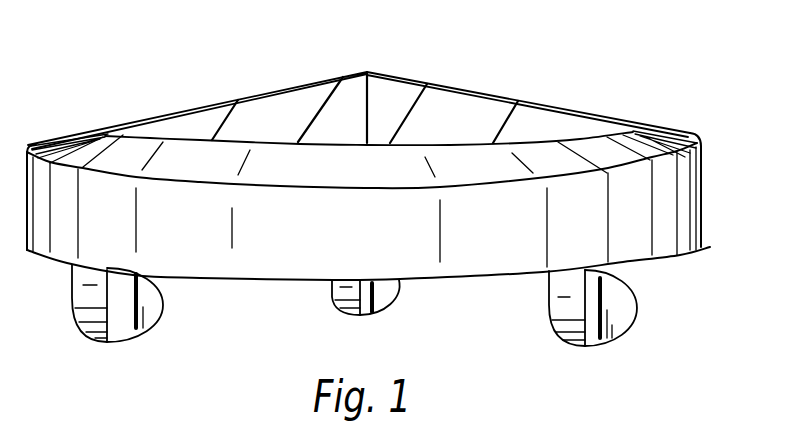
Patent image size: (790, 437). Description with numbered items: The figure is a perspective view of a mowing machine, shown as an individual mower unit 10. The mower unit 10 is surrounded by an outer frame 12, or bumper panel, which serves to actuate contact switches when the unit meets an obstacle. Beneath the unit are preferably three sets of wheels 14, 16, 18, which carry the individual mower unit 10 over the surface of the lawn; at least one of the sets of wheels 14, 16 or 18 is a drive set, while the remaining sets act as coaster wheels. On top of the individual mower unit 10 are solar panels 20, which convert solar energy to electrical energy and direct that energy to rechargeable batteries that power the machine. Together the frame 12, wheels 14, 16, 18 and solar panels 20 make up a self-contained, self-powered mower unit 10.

The individual mower unit 10 is at (680, 216).
The outer frame 12 is at (393, 246).
The set of wheels 14 is at (620, 323).
The set of wheels 16 is at (385, 293).
The set of wheels 18 is at (147, 315).
The solar panels 20 is at (282, 107).